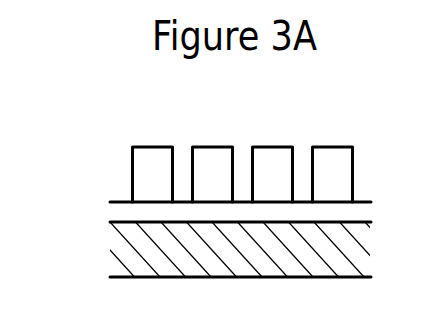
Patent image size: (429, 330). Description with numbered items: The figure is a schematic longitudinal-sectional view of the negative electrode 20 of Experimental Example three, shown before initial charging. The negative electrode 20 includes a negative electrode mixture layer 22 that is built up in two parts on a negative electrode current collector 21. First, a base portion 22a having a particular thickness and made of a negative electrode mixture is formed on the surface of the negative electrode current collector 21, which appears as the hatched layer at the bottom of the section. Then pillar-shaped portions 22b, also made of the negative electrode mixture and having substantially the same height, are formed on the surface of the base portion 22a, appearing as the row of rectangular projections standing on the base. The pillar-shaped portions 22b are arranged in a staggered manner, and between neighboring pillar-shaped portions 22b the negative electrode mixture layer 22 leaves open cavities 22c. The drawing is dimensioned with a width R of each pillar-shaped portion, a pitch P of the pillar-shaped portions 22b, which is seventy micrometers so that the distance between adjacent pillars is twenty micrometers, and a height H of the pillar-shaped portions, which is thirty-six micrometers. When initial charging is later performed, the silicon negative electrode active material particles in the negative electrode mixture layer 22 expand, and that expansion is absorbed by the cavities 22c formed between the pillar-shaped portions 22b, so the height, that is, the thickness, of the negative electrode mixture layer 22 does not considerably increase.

The negative electrode 20 is at (109, 101).
The negative electrode current collector 21 is at (135, 259).
The negative electrode mixture layer 22 is at (379, 147).
The base portion 22a is at (307, 213).
The pillar-shaped portions 22b is at (330, 158).
The cavities 22c is at (302, 177).
The width of convex portion R is at (172, 147).
The pitch P is at (232, 147).
The height H is at (132, 147).